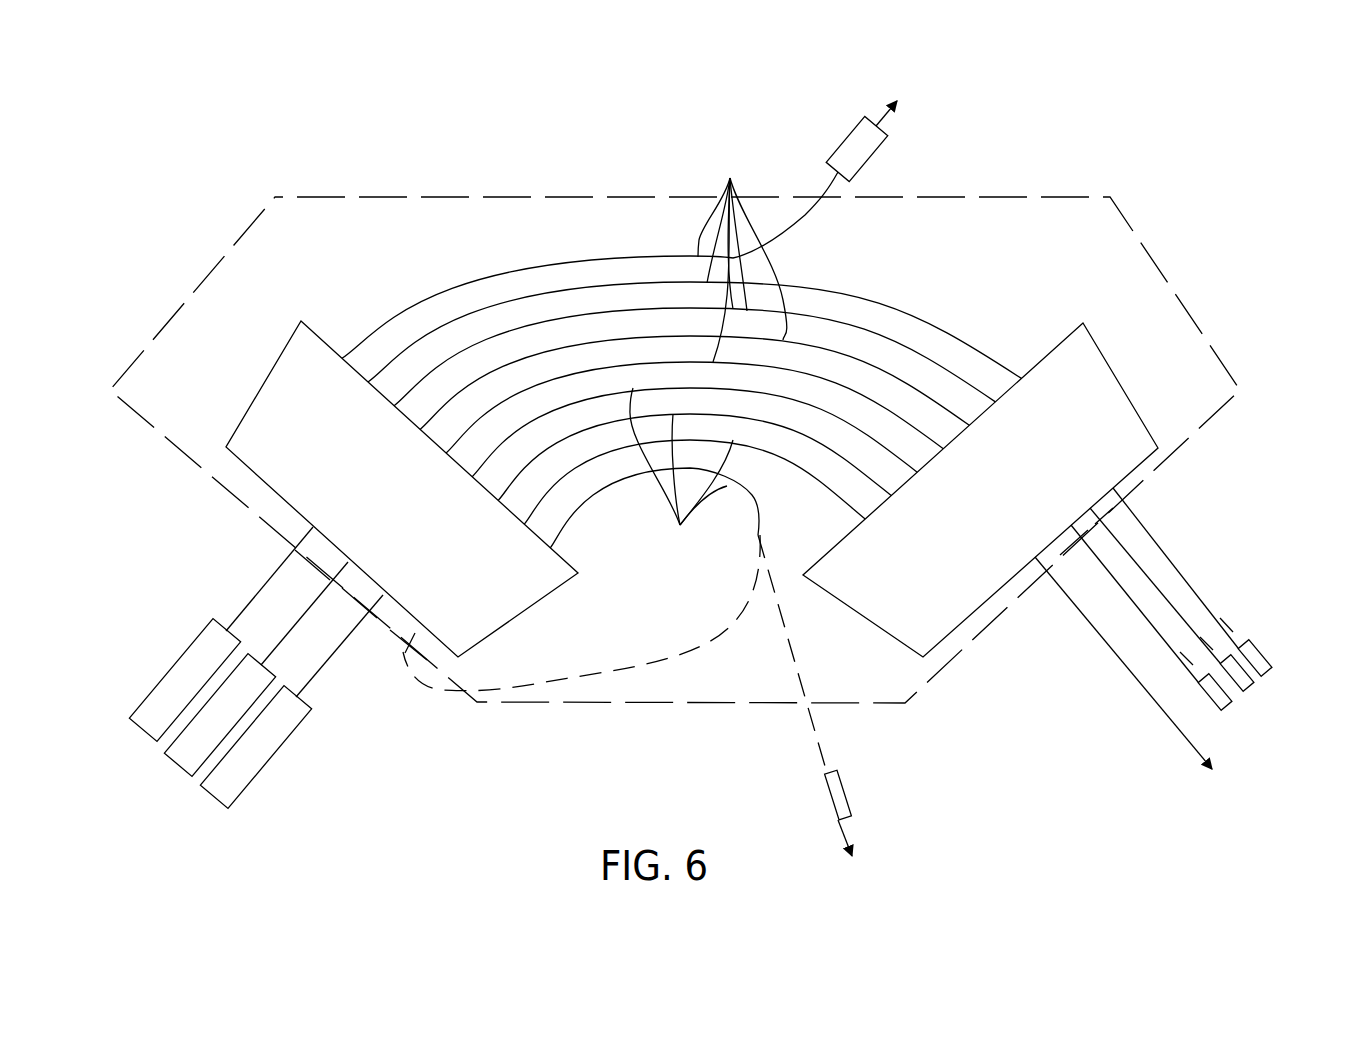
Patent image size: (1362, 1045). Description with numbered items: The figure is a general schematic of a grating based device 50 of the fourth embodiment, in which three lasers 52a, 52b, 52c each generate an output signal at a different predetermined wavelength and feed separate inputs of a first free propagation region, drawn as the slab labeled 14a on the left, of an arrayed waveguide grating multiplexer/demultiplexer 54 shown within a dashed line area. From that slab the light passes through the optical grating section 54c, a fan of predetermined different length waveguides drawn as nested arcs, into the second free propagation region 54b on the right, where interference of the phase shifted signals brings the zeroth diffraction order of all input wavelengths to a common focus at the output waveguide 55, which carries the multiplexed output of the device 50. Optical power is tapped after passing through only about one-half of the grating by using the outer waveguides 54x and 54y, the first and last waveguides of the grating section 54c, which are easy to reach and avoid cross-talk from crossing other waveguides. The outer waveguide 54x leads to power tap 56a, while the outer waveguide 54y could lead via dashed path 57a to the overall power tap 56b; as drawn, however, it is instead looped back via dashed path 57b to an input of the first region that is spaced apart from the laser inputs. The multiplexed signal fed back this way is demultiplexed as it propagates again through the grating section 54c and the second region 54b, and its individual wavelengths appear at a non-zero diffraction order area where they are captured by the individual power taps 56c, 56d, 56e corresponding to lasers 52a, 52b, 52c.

The grating based device 50 is at (412, 166).
The Arrayed Waveguide Grating Multiplexer/Demultiplexer 54 is at (681, 368).
The outer waveguide 54x is at (615, 256).
The outer waveguide 54y is at (585, 508).
The optical grating section 54c is at (708, 353).
The second Free Propagation Region 54b is at (1127, 395).
The input slab waveguide 14a is at (263, 385).
The laser 52a is at (175, 652).
The laser 52b is at (259, 655).
The laser 52c is at (273, 758).
The output waveguide 55 is at (1105, 633).
The power tap 56a is at (833, 137).
The overall power tap 56b is at (847, 782).
The individual power tap 56c is at (1227, 712).
The individual power tap 56d is at (1253, 697).
The individual power tap 56e is at (1267, 650).
The dashed path 57a is at (797, 645).
The dashed path 57b is at (663, 657).